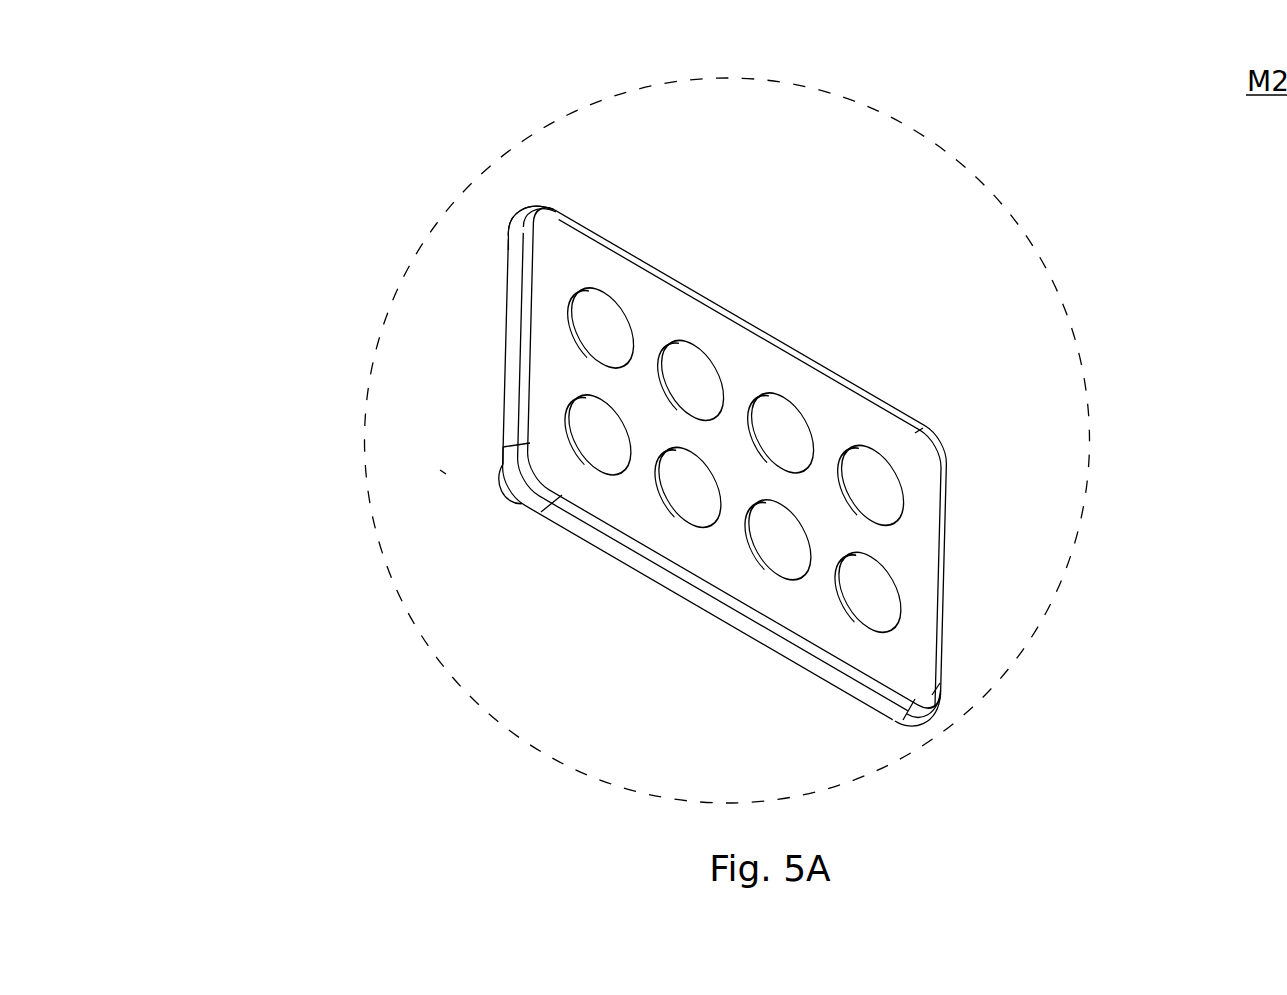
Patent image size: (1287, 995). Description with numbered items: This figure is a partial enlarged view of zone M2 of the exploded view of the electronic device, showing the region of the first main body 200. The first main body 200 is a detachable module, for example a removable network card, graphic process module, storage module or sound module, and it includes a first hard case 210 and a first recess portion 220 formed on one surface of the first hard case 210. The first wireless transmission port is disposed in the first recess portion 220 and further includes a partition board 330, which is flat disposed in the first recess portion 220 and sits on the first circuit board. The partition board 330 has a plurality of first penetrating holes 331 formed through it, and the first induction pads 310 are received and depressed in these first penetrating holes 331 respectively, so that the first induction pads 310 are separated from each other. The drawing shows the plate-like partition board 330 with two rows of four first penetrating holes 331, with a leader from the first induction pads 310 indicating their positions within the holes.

The first main body 200 is at (230, 513).
The first hard case 210 is at (443, 472).
The first recess portion 220 is at (541, 476).
The first induction pads 310 is at (870, 478).
The partition board 330 is at (562, 247).
The first penetrating holes 331 is at (679, 341).